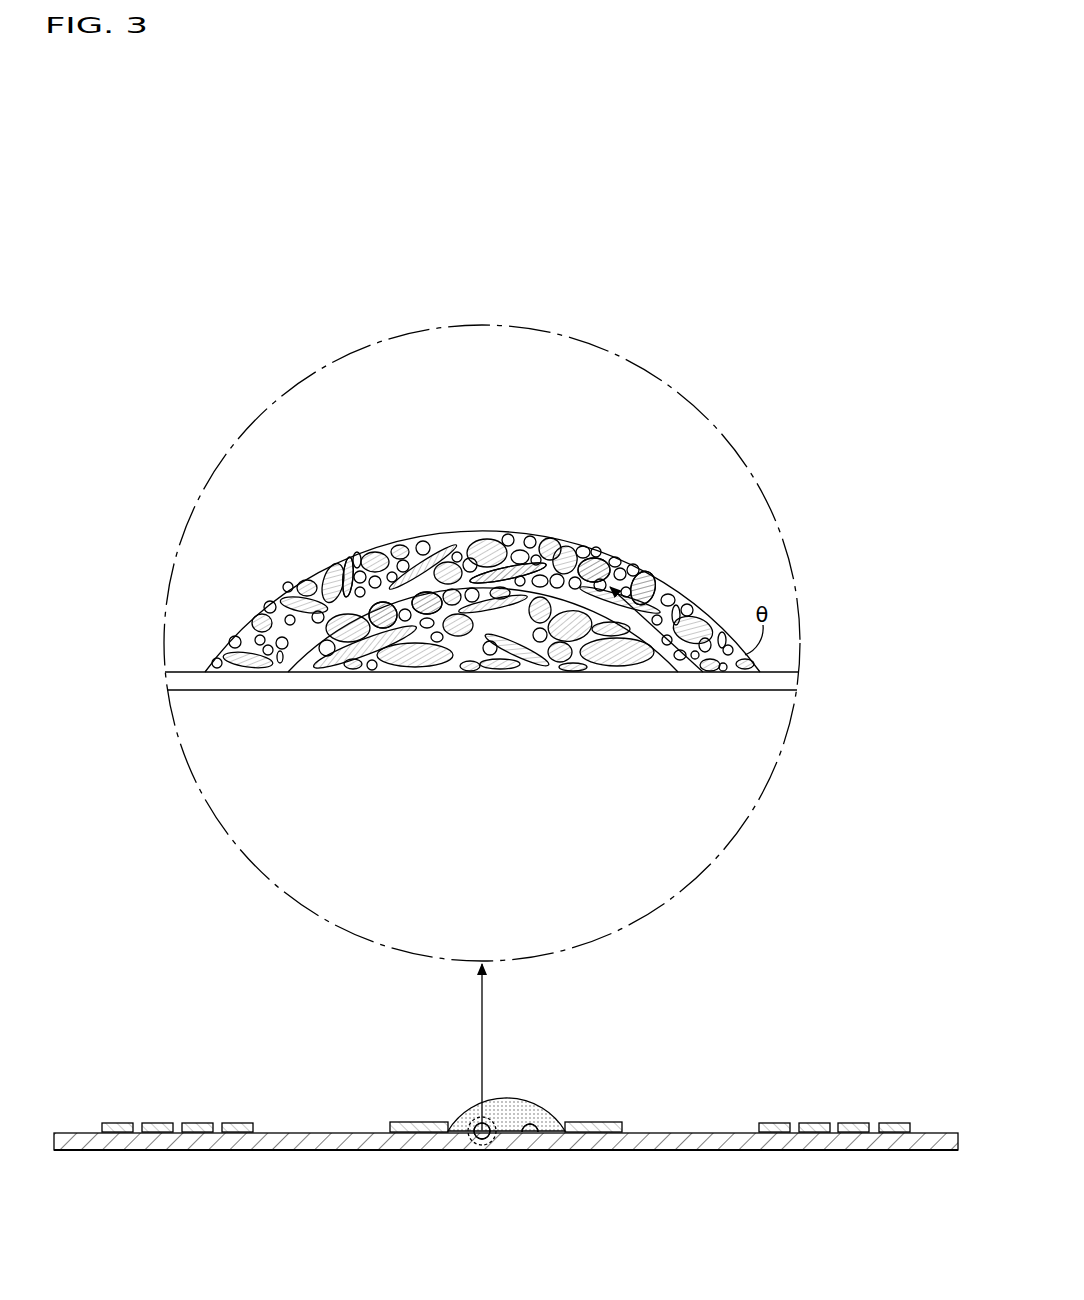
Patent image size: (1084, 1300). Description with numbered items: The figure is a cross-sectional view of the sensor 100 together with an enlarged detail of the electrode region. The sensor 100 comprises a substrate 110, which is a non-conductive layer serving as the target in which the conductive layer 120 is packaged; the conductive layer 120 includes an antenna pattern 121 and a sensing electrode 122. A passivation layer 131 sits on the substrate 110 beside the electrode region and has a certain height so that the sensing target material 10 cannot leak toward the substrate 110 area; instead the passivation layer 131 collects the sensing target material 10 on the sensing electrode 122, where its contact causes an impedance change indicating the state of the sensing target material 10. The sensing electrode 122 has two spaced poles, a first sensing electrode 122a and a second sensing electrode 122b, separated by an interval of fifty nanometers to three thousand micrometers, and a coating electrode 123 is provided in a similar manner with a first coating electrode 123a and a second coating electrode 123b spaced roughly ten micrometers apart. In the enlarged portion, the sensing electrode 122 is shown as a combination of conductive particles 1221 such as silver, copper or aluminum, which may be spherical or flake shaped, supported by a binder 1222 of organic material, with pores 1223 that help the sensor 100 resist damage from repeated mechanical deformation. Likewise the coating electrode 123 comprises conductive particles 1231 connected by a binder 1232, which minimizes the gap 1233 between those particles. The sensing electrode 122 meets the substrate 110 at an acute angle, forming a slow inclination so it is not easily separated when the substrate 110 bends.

The sensor 100 is at (92, 993).
The substrate 110 is at (337, 680).
The conductive layer 120 is at (348, 611).
The antenna pattern 121 is at (262, 1116).
The sensing electrode 122 is at (502, 478).
The coating electrode 123 is at (577, 458).
The conductive particles 1221 is at (427, 596).
The binder 1222 is at (489, 580).
The pores 1223 is at (383, 601).
The conductive particles 1231 is at (598, 560).
The binder 1232 is at (653, 578).
The gap 1233 is at (523, 557).
The passivation layer 131 is at (418, 1121).
The sensing target material 10 is at (546, 1077).
The first sensing electrode 122a is at (478, 1141).
The first coating electrode 123a is at (482, 1131).
The second sensing electrode 122b is at (534, 1140).
The second coating electrode 123b is at (530, 1128).